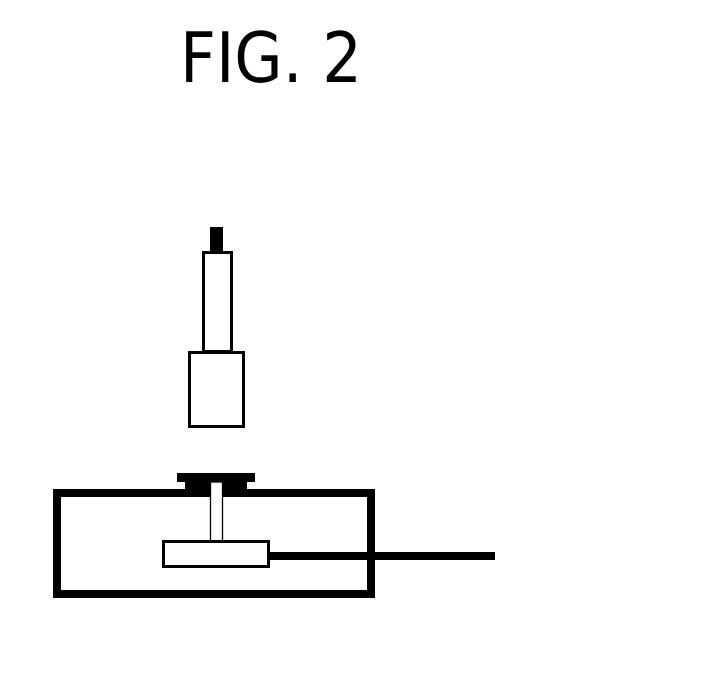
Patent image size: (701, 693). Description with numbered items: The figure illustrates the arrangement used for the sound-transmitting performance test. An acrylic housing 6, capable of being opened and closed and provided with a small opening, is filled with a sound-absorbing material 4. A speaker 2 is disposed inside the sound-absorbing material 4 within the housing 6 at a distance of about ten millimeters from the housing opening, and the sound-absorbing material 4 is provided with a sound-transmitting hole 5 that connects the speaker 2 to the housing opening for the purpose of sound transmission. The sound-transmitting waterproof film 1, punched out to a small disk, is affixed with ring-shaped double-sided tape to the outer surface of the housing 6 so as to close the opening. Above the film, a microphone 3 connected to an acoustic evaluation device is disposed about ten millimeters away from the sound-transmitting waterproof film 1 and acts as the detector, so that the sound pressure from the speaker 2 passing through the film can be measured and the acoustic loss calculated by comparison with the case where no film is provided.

The sound-transmitting waterproof film 1 is at (245, 472).
The speaker 2 is at (253, 557).
The microphone 3 is at (233, 370).
The sound-absorbing material 4 is at (105, 518).
The sound-transmitting hole 5 is at (217, 517).
The housing 6 is at (348, 598).